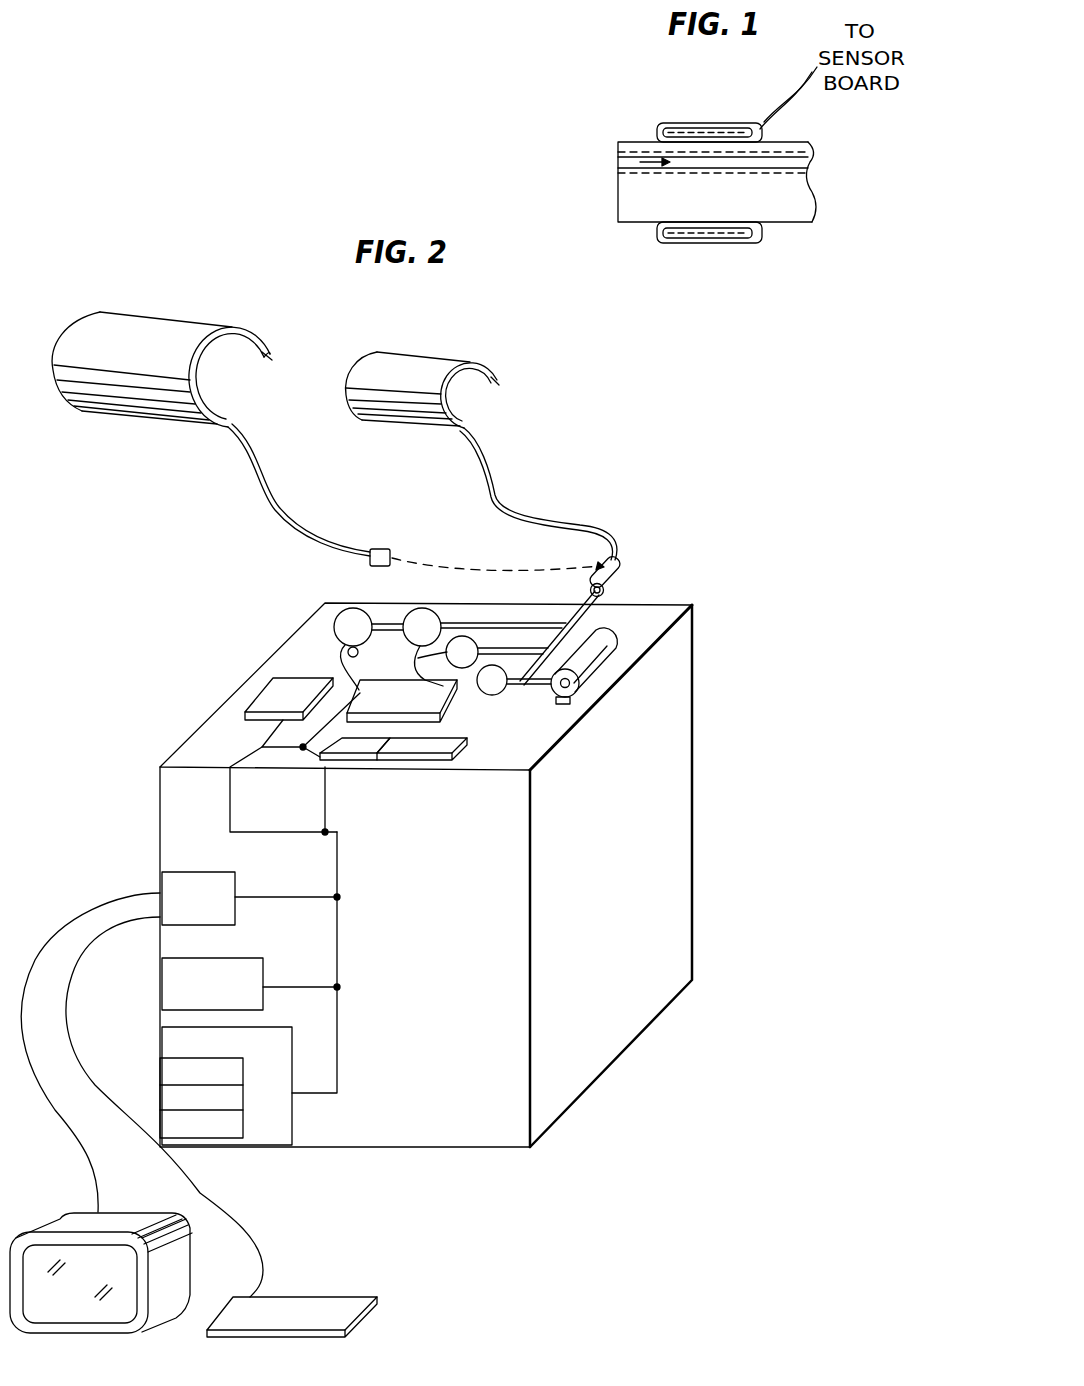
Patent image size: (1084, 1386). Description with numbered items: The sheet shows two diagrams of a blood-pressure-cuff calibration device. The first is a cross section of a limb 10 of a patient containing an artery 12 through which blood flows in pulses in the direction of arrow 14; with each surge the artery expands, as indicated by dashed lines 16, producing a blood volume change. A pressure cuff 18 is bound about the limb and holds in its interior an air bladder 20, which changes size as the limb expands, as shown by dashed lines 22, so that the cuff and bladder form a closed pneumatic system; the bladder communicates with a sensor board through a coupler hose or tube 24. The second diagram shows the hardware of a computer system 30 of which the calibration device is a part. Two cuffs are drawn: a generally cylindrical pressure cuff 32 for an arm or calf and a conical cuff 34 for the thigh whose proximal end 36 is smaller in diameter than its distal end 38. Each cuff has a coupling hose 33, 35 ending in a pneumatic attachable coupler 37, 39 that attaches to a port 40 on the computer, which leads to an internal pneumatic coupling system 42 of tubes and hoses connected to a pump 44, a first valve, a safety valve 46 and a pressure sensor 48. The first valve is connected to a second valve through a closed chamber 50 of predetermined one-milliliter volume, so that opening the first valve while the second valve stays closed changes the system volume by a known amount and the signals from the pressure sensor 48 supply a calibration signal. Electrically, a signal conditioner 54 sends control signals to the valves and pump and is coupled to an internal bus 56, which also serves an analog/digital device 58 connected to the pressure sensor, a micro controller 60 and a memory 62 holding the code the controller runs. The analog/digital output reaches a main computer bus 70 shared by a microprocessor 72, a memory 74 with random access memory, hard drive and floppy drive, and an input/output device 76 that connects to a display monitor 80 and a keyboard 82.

In FIG. 1, the limb 10 is at (635, 150).
In FIG. 1, the artery 12 is at (640, 142).
In FIG. 1, the arrow 14 is at (647, 160).
In FIG. 1, the dashed lines 16 is at (650, 145).
In FIG. 1, the pressure cuff 18 is at (712, 125).
In FIG. 1, the air bladder 20 is at (675, 125).
In FIG. 1, the dashed lines 22 is at (737, 124).
In FIG. 1, the coupler hose or tube 24 is at (780, 114).
In FIG. 2, the computer system 30 is at (154, 819).
In FIG. 2, the pressure cuff 32 is at (432, 353).
In FIG. 2, the coupling hose 33 is at (505, 492).
In FIG. 2, the cuff 34 is at (200, 321).
In FIG. 2, the coupling hose 35 is at (282, 512).
In FIG. 2, the proximal end 36 is at (276, 347).
In FIG. 2, the pneumatic attachable coupler 37 is at (628, 565).
In FIG. 2, the distal end 38 is at (56, 345).
In FIG. 2, the pneumatic attachable coupler 39 is at (380, 548).
In FIG. 2, the port 40 is at (606, 590).
In FIG. 2, the pneumatic internal coupling system 42 is at (562, 618).
In FIG. 2, the pump 44 is at (617, 631).
In FIG. 2, the safety valve 46 is at (417, 658).
In FIG. 2, the pressure sensor 48 is at (495, 695).
In FIG. 2, the closed chamber 50 is at (388, 623).
In FIG. 2, the signal conditioner 54 is at (455, 721).
In FIG. 2, the internal bus 56 is at (272, 735).
In FIG. 2, the analog/digital device 58 is at (263, 691).
In FIG. 2, the micro controller 60 is at (360, 758).
In FIG. 2, the memory 62 is at (410, 758).
In FIG. 2, the main computer bus 70 is at (340, 926).
In FIG. 2, the microprocessor 72 is at (243, 958).
In FIG. 2, the memory 74 is at (278, 1027).
In FIG. 2, the input/output device 76 is at (198, 872).
In FIG. 2, the display monitor 80 is at (118, 1212).
In FIG. 2, the keyboard 82 is at (340, 1297).